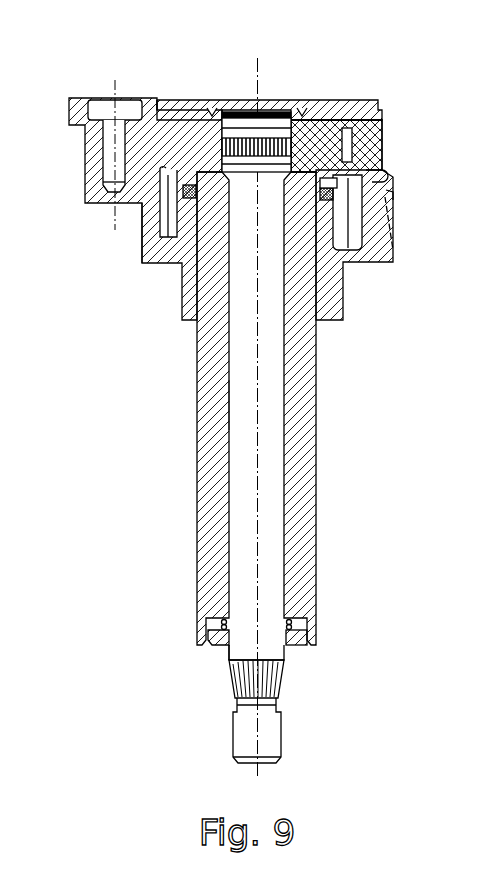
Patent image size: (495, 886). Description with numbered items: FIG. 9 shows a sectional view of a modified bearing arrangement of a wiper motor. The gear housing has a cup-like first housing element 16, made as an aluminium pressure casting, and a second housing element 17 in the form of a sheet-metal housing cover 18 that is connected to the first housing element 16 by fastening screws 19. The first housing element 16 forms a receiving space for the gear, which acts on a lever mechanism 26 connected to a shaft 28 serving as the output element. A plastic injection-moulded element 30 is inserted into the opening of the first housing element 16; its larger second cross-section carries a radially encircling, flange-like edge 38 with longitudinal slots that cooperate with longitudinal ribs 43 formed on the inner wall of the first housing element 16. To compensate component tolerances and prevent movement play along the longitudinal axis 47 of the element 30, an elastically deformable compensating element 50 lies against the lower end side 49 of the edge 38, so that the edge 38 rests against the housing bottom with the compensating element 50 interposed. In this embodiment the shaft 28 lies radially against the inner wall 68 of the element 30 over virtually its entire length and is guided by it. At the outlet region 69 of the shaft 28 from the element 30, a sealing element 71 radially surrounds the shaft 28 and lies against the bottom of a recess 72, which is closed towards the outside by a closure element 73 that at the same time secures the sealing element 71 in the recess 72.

The first housing element 16 is at (172, 268).
The second housing element 17 is at (270, 112).
The housing cover 18 is at (256, 147).
The fastening screw 19 is at (122, 98).
The lever mechanism 26 is at (368, 129).
The shaft 28 is at (263, 551).
The element 30 is at (300, 390).
The edge 38 is at (378, 179).
The longitudinal rib 43 is at (170, 228).
The longitudinal axis 47 is at (262, 424).
The end side 49 is at (190, 186).
The compensating element 50 is at (388, 198).
The inner wall 68 is at (229, 403).
The outlet region 69 is at (223, 652).
The sealing element 71 is at (320, 616).
The recess 72 is at (220, 620).
The closure element 73 is at (300, 640).